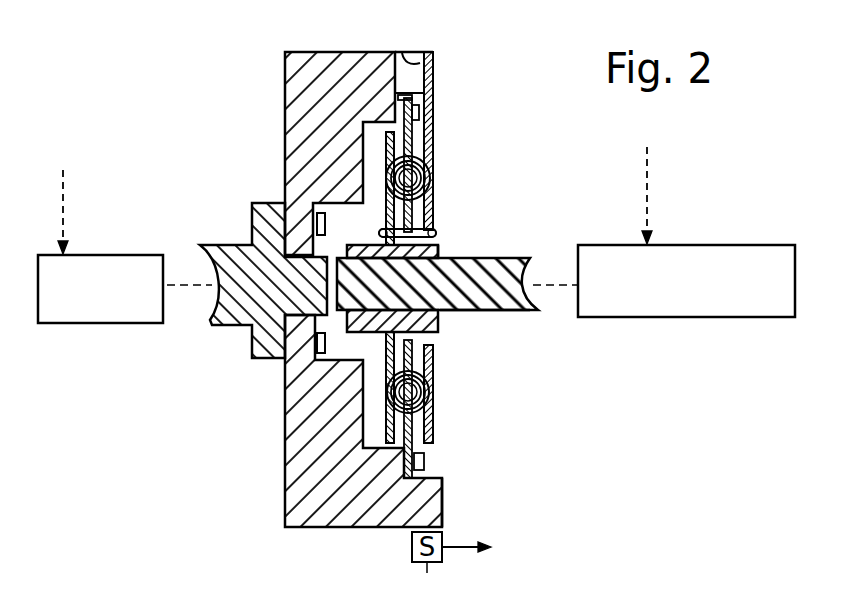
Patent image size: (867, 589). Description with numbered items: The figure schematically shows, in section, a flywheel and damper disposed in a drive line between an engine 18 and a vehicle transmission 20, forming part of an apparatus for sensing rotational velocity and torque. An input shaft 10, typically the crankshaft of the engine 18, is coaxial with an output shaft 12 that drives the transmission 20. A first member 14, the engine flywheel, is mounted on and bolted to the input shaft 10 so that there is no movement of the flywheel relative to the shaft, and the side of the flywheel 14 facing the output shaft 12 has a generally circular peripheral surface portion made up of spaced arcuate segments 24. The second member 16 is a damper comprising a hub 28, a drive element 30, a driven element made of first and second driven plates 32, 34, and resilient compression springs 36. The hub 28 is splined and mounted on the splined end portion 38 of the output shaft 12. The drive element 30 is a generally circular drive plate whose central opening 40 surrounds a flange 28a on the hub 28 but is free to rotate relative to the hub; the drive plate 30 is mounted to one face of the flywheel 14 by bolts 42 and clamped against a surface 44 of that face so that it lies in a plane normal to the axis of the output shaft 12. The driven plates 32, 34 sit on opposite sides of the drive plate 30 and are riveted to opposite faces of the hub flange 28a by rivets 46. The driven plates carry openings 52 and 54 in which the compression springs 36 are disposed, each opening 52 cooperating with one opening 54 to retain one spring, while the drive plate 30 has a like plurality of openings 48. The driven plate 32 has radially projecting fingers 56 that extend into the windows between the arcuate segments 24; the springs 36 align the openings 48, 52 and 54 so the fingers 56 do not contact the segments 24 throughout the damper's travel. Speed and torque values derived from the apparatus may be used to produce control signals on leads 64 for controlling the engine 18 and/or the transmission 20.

The input shaft 10 is at (222, 244).
The output shaft 12 is at (515, 257).
The first member 14 is at (287, 389).
The second member 16 is at (450, 179).
The engine 18 is at (105, 255).
The vehicle transmission 20 is at (672, 245).
The arcuate segments 24 is at (400, 73).
The hub 28 is at (443, 245).
The flange 28a is at (430, 212).
The drive element 30 is at (433, 122).
The first driven plate 32 is at (430, 347).
The second driven plate 34 is at (339, 347).
The compression springs 36 is at (432, 167).
The splined end portion 38 is at (458, 312).
The central opening 40 is at (441, 249).
The bolts 42 is at (425, 462).
The surface 44 is at (433, 80).
The rivets 46 is at (378, 233).
The openings 48 is at (430, 147).
The openings 52 is at (433, 378).
The openings 54 is at (388, 412).
The fingers 56 is at (433, 56).
The leads 64 is at (66, 186).